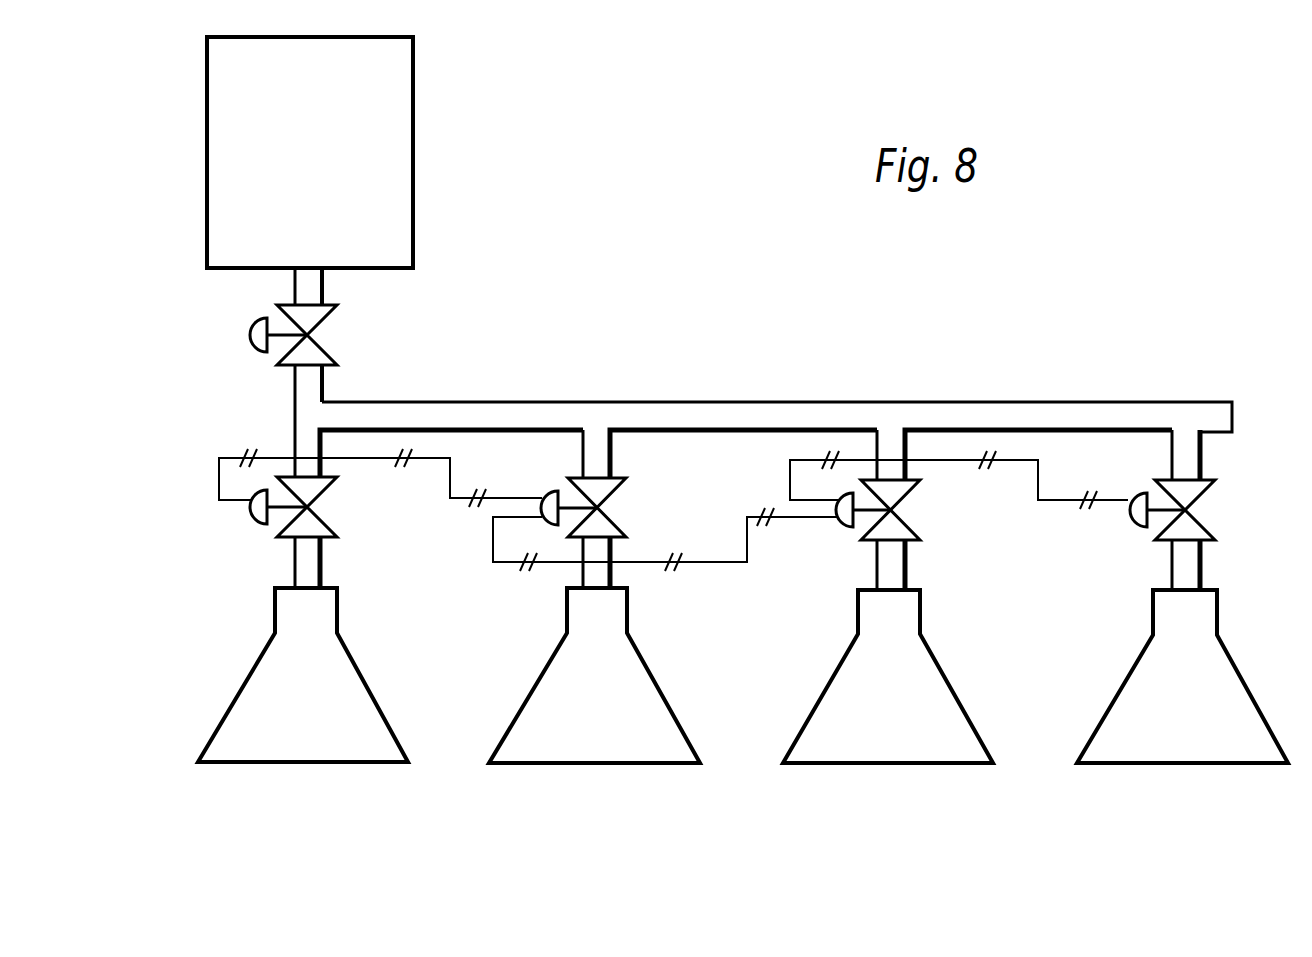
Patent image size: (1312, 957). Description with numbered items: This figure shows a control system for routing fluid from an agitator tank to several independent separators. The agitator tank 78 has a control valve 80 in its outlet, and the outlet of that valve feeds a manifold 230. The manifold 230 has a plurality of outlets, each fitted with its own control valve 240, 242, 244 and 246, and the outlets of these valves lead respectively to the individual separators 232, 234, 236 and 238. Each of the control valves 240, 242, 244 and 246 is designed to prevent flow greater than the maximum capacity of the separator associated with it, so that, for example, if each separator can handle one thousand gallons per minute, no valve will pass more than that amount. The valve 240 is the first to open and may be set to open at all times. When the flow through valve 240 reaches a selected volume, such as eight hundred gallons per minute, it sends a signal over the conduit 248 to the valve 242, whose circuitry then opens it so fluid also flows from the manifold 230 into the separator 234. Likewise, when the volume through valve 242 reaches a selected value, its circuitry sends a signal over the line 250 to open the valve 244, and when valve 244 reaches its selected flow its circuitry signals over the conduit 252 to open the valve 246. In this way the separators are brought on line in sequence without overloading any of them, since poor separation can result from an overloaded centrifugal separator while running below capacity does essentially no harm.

The agitator tank 78 is at (413, 70).
The control valve 80 is at (327, 312).
The manifold 230 is at (1195, 403).
The separator 232 is at (249, 675).
The separator 234 is at (541, 677).
The separator 236 is at (834, 677).
The separator 238 is at (1127, 677).
The control valve 240 is at (285, 540).
The control valve 242 is at (626, 479).
The control valve 244 is at (921, 539).
The control valve 246 is at (1214, 487).
The conduit 248 is at (449, 479).
The line 250 is at (722, 563).
The conduit 252 is at (1064, 501).